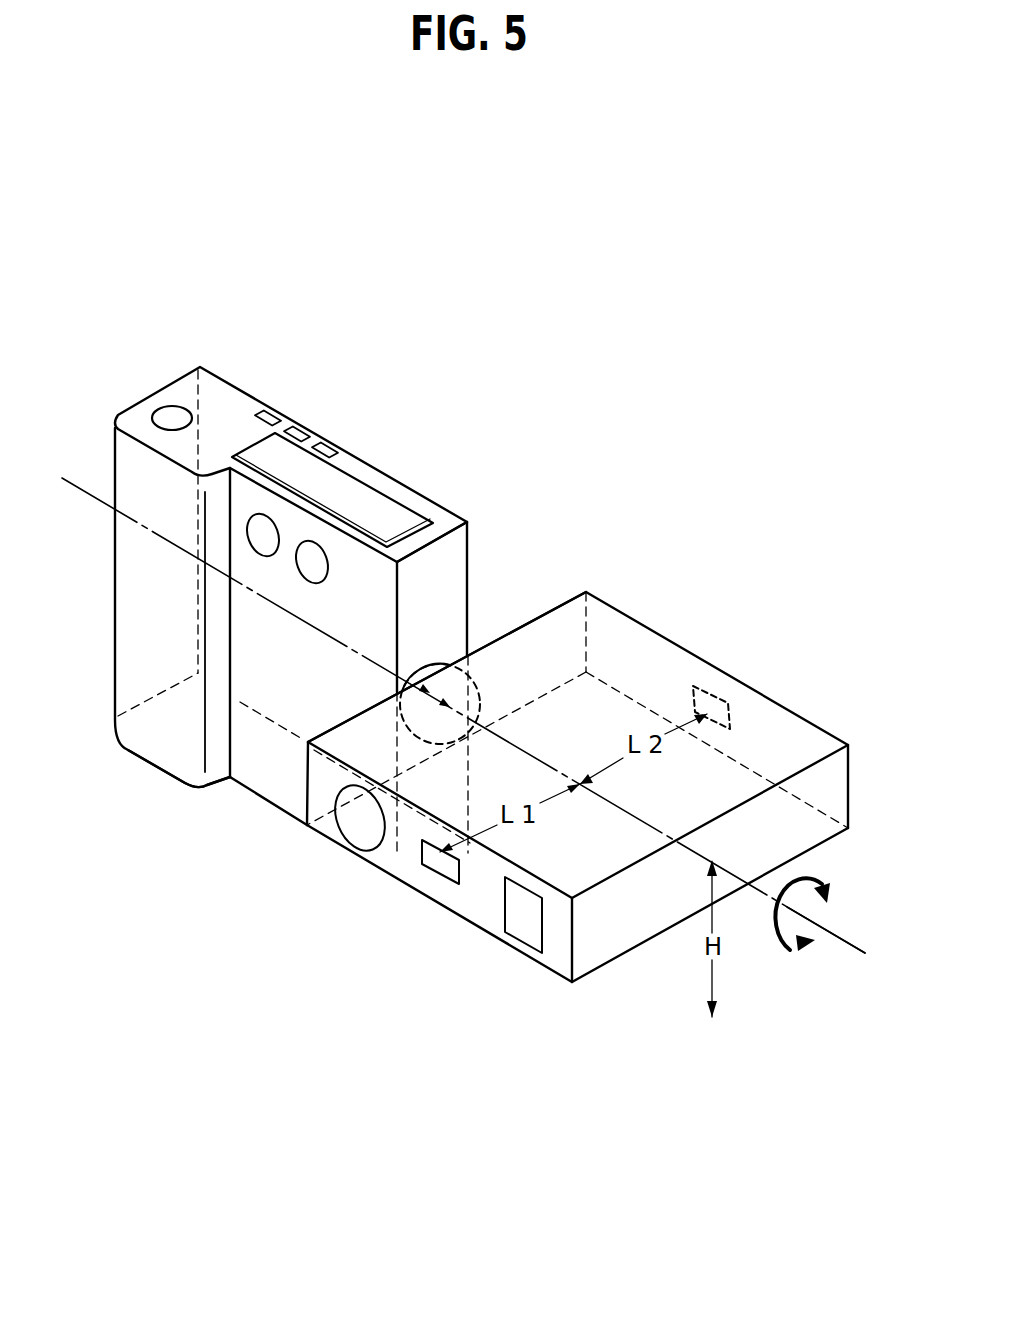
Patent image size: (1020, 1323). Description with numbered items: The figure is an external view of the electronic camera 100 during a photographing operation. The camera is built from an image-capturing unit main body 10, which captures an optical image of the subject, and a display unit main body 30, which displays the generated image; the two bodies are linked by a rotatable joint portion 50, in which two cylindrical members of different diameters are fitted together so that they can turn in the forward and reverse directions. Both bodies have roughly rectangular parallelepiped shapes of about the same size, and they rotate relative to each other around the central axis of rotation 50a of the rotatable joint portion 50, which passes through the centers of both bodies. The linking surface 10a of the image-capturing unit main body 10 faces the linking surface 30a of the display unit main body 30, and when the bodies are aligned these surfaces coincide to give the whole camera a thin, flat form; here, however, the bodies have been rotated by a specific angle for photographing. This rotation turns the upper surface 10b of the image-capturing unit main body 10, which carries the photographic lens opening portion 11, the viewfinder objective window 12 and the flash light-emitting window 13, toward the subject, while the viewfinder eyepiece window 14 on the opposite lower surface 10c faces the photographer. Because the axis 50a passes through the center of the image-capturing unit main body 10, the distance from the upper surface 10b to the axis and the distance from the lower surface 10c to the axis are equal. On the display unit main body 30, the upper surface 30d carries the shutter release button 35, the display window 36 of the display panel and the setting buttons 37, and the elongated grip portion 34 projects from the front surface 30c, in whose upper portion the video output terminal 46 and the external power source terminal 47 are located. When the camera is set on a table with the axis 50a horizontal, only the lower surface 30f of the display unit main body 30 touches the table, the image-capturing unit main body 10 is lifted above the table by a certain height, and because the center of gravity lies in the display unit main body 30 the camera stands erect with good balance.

The electronic camera 100 is at (742, 154).
The image-capturing unit main body 10 is at (680, 427).
The linking surface 10a is at (548, 624).
The upper surface 10b is at (550, 963).
The lower surface 10c is at (770, 713).
The photographic lens opening portion 11 is at (362, 828).
The viewfinder objective window 12 is at (435, 863).
The flash light-emitting window 13 is at (527, 930).
The viewfinder eyepiece window 14 is at (717, 700).
The display unit main body 30 is at (360, 285).
The linking surface 30a is at (443, 553).
The front surface 30c is at (275, 805).
The upper surface 30d is at (205, 400).
The lower surface 30f is at (252, 775).
The elongated grip portion 34 is at (150, 657).
The shutter release button 35 is at (172, 410).
The display window 36 is at (377, 507).
The setting buttons 37 is at (328, 440).
The video output terminal 46 is at (257, 546).
The external power source terminal 47 is at (305, 568).
The rotatable joint portion 50 is at (435, 670).
The central axis of rotation 50a is at (847, 943).